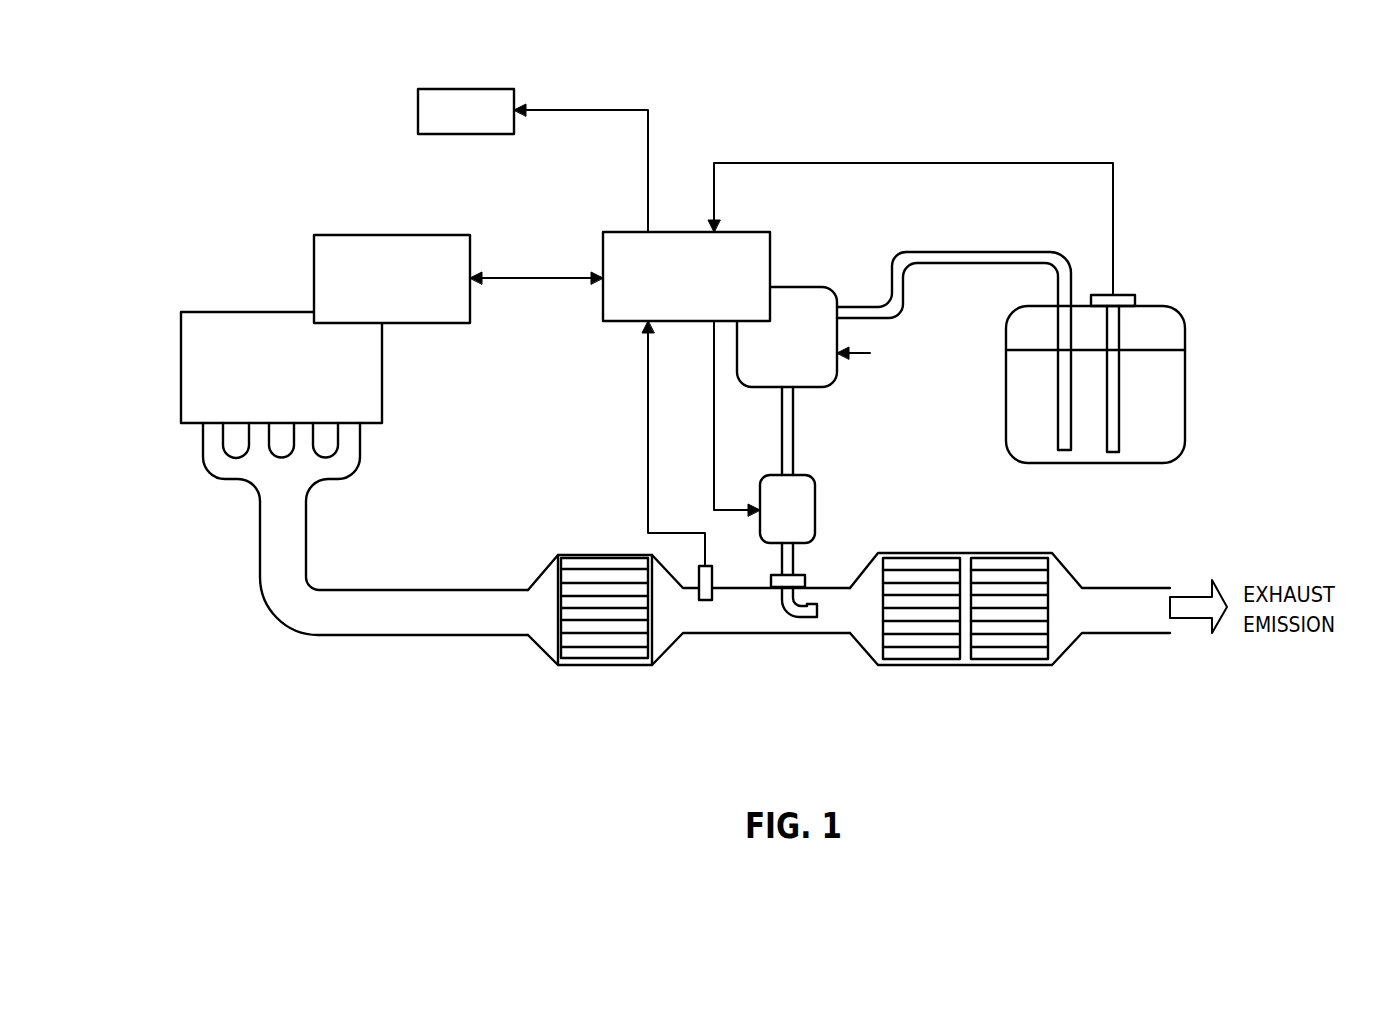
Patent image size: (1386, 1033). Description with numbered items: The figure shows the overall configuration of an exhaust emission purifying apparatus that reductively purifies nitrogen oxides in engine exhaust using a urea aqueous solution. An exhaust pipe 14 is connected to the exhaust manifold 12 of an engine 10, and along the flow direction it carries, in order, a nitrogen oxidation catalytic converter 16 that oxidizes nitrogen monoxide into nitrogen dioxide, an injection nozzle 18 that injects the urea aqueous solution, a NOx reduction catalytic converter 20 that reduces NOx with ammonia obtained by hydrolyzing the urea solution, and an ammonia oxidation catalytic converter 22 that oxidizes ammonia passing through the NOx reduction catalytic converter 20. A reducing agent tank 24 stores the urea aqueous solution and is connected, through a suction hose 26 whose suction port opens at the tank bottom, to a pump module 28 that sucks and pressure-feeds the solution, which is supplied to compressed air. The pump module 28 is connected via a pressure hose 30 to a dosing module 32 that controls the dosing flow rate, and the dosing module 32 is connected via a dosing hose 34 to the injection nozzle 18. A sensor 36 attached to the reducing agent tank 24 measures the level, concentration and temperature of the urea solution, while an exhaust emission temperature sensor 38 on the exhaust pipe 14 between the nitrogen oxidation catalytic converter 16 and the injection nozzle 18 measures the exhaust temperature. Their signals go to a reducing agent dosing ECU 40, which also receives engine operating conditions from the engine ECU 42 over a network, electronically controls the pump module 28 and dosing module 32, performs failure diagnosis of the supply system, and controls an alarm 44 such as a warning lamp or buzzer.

The engine 10 is at (222, 312).
The exhaust manifold 12 is at (352, 447).
The exhaust pipe 14 is at (398, 588).
The nitrogen oxidation catalytic converter 16 is at (605, 655).
The injection nozzle 18 is at (803, 610).
The NOx reduction catalytic converter 20 is at (927, 652).
The ammonia oxidation catalytic converter 22 is at (1015, 652).
The reducing agent tank 24 is at (1185, 325).
The suction hose 26 is at (948, 252).
The pump module 28 is at (825, 287).
The pressure hose 30 is at (797, 437).
The dosing module 32 is at (810, 513).
The dosing hose 34 is at (792, 568).
The sensor 36 is at (1125, 290).
The exhaust emission temperature sensor 38 is at (702, 602).
The reducing agent dosing ECU 40 is at (632, 232).
The engine ECU 42 is at (360, 235).
The alarm 44 is at (515, 98).